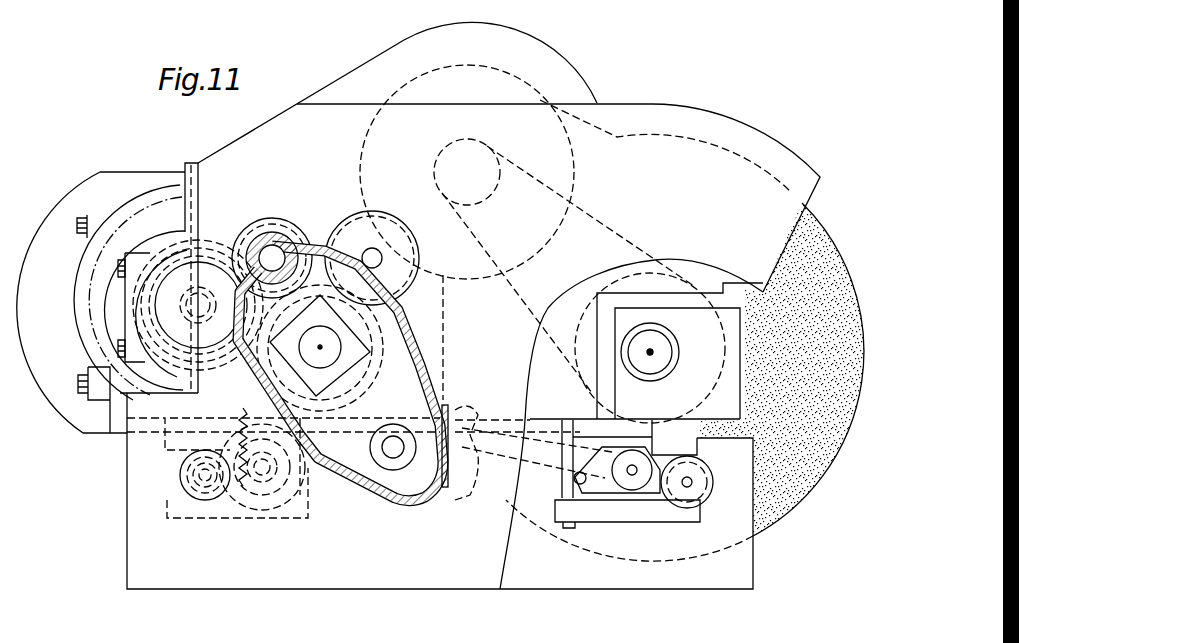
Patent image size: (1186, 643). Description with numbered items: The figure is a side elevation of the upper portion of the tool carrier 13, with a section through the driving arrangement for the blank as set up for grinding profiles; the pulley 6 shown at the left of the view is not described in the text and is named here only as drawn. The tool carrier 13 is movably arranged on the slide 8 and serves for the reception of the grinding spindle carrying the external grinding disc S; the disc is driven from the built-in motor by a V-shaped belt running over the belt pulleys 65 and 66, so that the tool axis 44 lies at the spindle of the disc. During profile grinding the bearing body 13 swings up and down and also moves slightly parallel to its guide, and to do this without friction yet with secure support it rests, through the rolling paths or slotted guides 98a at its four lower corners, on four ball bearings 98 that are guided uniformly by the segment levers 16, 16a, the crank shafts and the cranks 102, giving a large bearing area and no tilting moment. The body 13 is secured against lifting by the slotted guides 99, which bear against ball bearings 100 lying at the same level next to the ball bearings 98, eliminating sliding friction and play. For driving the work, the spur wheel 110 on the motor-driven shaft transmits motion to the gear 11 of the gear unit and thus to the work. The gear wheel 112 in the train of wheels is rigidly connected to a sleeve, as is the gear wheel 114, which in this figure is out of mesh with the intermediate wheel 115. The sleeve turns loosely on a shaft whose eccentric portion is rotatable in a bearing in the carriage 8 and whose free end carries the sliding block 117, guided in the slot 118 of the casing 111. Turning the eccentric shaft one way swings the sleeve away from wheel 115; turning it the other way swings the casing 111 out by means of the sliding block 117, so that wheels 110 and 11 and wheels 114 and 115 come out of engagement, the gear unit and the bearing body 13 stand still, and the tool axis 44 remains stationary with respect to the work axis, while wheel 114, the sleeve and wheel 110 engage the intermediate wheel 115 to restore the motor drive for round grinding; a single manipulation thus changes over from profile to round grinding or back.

The drive pulley 6 is at (202, 265).
The slide 8 is at (750, 570).
The gear 11 is at (226, 250).
The tool carrier 13 is at (132, 450).
The segment lever 16 is at (397, 505).
The segment lever 16a is at (463, 407).
The tool axis 44 is at (650, 352).
The belt pulley 65 is at (478, 150).
The belt pulley 66 is at (728, 352).
The ball bearing 98 is at (180, 478).
The rolling path 98a is at (190, 463).
The slotted guide 99 is at (181, 520).
The ball bearing 100 is at (448, 473).
The crank 102 is at (230, 418).
The spur wheel 110 is at (278, 220).
The casing 111 is at (438, 378).
The gear wheel 112 is at (365, 356).
The gear wheel 114 is at (352, 392).
The intermediate wheel 115 is at (402, 287).
The sliding block 117 is at (400, 308).
The slot 118 is at (398, 342).
The external grinding disc S is at (783, 518).